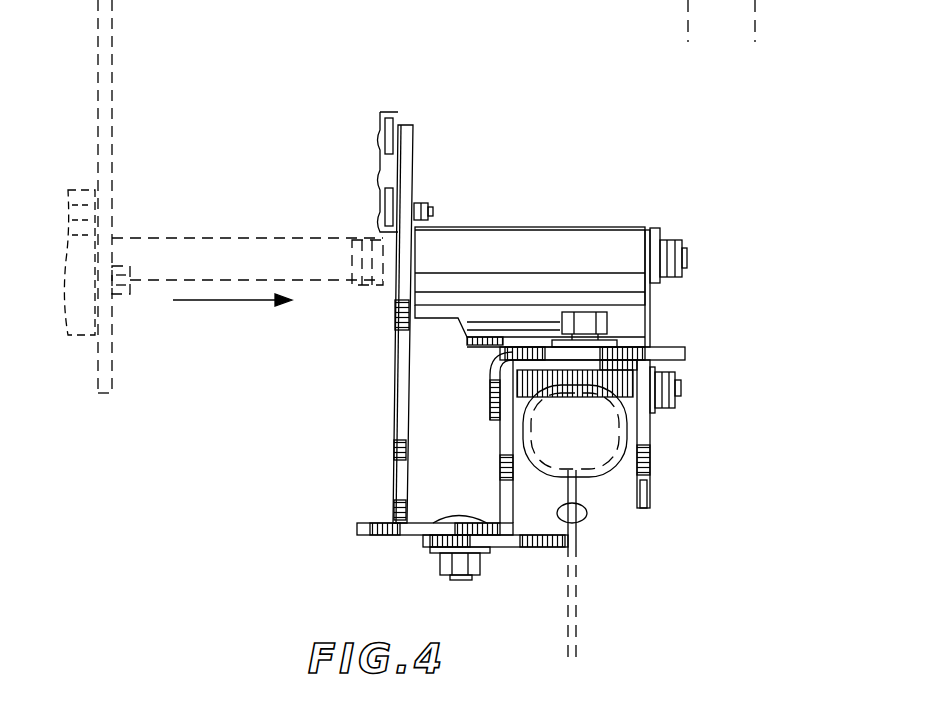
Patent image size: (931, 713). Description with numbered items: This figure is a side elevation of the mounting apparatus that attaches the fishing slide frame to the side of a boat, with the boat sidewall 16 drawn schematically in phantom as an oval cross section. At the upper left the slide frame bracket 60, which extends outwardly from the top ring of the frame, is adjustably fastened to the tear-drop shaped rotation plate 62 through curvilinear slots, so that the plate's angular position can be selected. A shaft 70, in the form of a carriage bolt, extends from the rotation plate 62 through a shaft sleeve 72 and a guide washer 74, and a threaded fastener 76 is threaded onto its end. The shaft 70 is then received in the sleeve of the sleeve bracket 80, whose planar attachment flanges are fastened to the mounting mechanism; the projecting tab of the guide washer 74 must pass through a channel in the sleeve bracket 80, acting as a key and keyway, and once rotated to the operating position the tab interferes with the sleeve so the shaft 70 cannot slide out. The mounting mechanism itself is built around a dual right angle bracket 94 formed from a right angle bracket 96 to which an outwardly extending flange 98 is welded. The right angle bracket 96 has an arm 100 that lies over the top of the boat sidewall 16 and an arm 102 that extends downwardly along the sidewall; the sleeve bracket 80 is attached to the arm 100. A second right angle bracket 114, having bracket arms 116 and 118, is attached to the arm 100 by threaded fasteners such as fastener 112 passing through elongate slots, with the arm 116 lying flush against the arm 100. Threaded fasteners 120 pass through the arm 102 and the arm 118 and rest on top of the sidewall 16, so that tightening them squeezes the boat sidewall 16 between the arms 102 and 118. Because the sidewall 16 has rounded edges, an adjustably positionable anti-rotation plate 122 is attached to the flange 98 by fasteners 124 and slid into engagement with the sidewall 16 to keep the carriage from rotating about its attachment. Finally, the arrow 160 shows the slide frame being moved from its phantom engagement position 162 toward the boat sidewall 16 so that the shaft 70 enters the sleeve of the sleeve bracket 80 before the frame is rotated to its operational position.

The boat sidewall 16 is at (620, 480).
The slide frame bracket 60 is at (89, 192).
The rotation plate 62 is at (115, 3).
The shaft 70 is at (688, 258).
The shaft sleeve 72 is at (643, 237).
The guide washer 74 is at (537, 227).
The threaded fastener 76 is at (663, 280).
The sleeve bracket 80 is at (652, 300).
The dual right angle bracket 94 is at (702, 360).
The right angle bracket 96 is at (486, 468).
The flange 98 is at (357, 530).
The arm 100 is at (688, 352).
The arm 102 is at (500, 425).
The threaded fastener 112 is at (616, 322).
The right angle bracket 114 is at (668, 487).
The bracket arm 116 is at (650, 405).
The bracket arm 118 is at (652, 465).
The threaded fastener 120 is at (694, 385).
The anti-rotation plate 122 is at (545, 550).
The fasteners 124 is at (436, 566).
The arrow 160 is at (237, 303).
The engagement position 162 is at (130, 100).